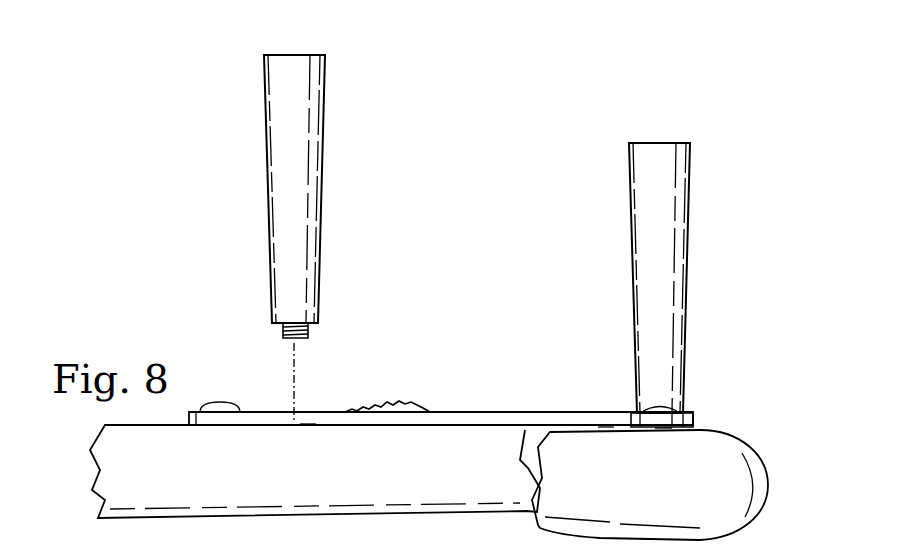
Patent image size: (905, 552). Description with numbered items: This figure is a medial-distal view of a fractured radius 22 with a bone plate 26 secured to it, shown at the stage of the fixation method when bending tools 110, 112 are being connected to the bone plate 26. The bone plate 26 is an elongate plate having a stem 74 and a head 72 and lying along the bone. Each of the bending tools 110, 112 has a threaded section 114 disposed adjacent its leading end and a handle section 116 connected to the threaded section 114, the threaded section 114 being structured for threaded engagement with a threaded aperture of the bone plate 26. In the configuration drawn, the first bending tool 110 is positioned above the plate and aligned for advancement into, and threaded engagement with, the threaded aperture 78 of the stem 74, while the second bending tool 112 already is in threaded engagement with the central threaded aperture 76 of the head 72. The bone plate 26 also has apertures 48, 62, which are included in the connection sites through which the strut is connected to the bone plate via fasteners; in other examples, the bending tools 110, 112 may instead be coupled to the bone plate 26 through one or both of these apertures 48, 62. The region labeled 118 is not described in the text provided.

The fractured radius 22 is at (372, 512).
The bone plate 26 is at (263, 412).
The aperture 48 is at (387, 402).
The aperture 62 is at (606, 428).
The head 72 is at (663, 430).
The stem 74 is at (345, 412).
The central threaded aperture 76 is at (680, 406).
The threaded aperture 78 is at (308, 416).
The bending tool 110 is at (268, 127).
The bending tool 112 is at (634, 224).
The threaded section 114 is at (282, 335).
The handle section 116 is at (271, 207).
The finger 118 is at (650, 491).